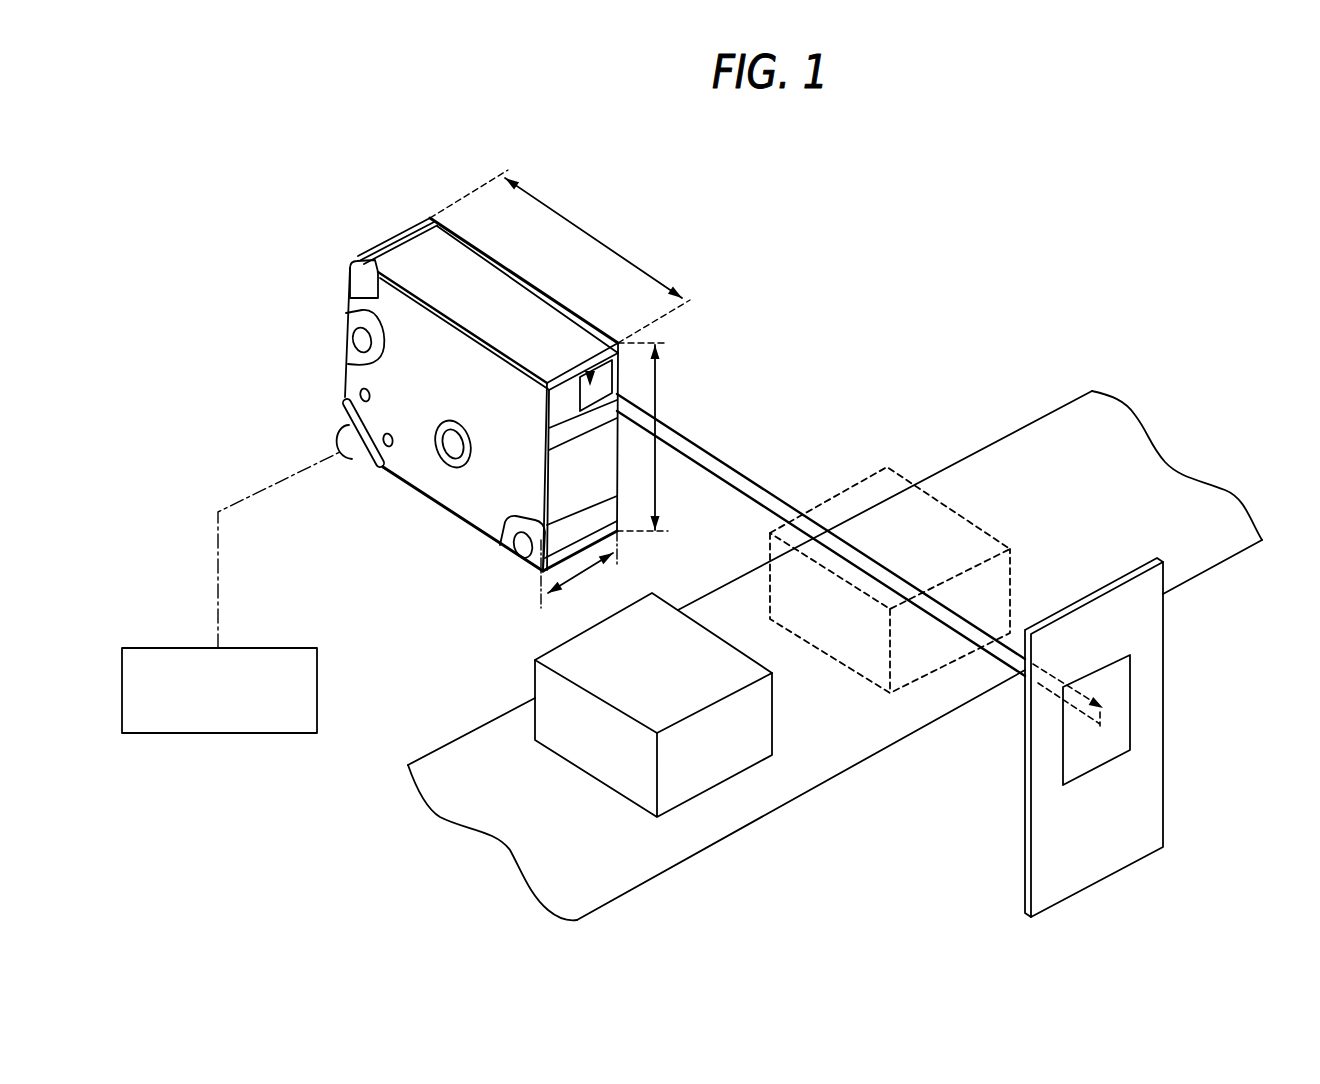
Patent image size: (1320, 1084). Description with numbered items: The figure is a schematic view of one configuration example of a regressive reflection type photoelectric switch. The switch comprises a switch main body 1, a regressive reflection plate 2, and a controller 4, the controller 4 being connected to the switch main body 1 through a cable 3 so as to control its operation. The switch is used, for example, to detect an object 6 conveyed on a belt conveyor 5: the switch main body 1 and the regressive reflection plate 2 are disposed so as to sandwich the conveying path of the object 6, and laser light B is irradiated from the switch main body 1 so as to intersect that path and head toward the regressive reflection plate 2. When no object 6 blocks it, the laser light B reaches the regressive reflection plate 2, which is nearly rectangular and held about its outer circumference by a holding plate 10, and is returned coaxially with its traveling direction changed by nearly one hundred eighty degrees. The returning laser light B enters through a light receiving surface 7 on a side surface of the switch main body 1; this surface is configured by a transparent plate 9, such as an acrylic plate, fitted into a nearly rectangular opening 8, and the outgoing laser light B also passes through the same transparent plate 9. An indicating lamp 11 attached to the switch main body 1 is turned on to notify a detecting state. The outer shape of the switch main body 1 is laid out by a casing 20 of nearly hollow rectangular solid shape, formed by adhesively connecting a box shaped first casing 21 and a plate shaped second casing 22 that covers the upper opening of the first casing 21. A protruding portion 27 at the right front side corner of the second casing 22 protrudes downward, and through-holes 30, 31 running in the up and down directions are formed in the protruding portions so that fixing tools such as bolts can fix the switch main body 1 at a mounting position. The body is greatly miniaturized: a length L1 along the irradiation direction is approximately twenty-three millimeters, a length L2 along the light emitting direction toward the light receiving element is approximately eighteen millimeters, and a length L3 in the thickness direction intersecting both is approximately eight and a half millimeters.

The switch main body 1 is at (501, 378).
The regressive reflection plate 2 is at (1123, 705).
The cable 3 is at (340, 437).
The controller 4 is at (215, 735).
The belt conveyor 5 is at (1001, 444).
The object 6 is at (725, 770).
The light receiving surface 7 is at (594, 334).
The opening 8 is at (598, 404).
The transparent plate 9 is at (578, 380).
The holding plate 10 is at (1108, 872).
The indicating lamp 11 is at (357, 262).
The casing 20 is at (481, 337).
The first casing 21 is at (353, 148).
The second casing 22 is at (405, 305).
The protruding portion 27 is at (570, 530).
The through-hole 30 is at (352, 338).
The through-hole 31 is at (522, 552).
The laser light B is at (765, 485).
The length L1 is at (592, 236).
The length L2 is at (657, 388).
The length L3 is at (585, 572).